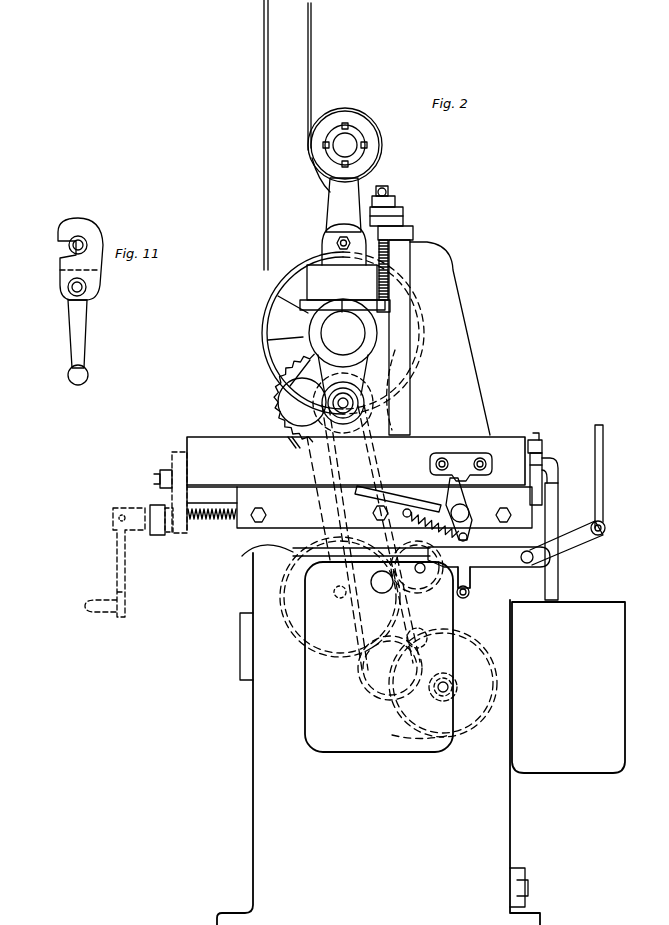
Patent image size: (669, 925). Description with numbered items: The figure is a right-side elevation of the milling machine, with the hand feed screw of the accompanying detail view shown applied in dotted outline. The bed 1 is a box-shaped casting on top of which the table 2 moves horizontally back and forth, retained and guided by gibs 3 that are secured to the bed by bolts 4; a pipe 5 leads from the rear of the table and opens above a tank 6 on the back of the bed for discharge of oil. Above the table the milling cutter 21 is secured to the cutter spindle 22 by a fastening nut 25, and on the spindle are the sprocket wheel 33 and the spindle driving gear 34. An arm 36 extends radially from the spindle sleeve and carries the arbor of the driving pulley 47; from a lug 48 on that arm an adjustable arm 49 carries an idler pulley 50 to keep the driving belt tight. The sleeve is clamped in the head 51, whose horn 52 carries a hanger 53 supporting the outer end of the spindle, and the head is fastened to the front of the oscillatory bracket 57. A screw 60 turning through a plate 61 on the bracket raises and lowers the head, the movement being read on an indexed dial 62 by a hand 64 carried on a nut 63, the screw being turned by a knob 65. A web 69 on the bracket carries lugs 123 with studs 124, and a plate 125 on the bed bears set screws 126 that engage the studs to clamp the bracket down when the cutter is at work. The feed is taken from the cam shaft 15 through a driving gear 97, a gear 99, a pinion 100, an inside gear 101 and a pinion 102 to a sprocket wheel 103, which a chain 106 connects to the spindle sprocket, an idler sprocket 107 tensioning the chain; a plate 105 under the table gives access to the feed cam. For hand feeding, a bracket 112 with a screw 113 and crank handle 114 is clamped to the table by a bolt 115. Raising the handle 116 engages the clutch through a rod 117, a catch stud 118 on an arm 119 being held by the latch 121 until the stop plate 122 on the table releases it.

In FIG. 2, the bed 1 is at (378, 739).
In FIG. 2, the table 2 is at (356, 461).
In FIG. 2, the gibs 3 is at (359, 507).
In FIG. 2, the bolts 4 is at (260, 509).
In FIG. 2, the pipe 5 is at (562, 573).
In FIG. 2, the tank 6 is at (568, 687).
In FIG. 2, the cam shaft 15 is at (341, 600).
In FIG. 2, the milling cutter 21 is at (390, 397).
In FIG. 2, the cutter spindle 22 is at (366, 408).
In FIG. 2, the fastening nut 25 is at (300, 404).
In FIG. 2, the sprocket wheel 33 is at (290, 372).
In FIG. 2, the spindle driving gear 34 is at (286, 428).
In FIG. 2, the arm 36 is at (342, 288).
In FIG. 2, the driving pulley 47 is at (293, 267).
In FIG. 2, the lug 48 is at (344, 244).
In FIG. 2, the arm 49 is at (343, 205).
In FIG. 2, the idler pulley 50 is at (375, 118).
In FIG. 2, the head 51 is at (377, 320).
In FIG. 2, the horn 52 is at (365, 339).
In FIG. 2, the hanger 53 is at (368, 370).
In FIG. 2, the oscillatory bracket 57 is at (413, 252).
In FIG. 2, the screw 60 is at (389, 283).
In FIG. 2, the plate 61 is at (413, 233).
In FIG. 2, the indexed dial 62 is at (404, 219).
In FIG. 2, the nut 63 is at (396, 206).
In FIG. 2, the hand 64 is at (337, 202).
In FIG. 2, the knob 65 is at (386, 194).
In FIG. 2, the web 69 is at (473, 426).
In FIG. 2, the driving gear 97 is at (285, 626).
In FIG. 2, the gear 99 is at (352, 683).
In FIG. 2, the pinion 100 is at (418, 630).
In FIG. 2, the gear 101 is at (486, 634).
In FIG. 2, the pinion 102 is at (455, 692).
In FIG. 2, the sprocket wheel 103 is at (466, 740).
In FIG. 2, the plate 105 is at (379, 657).
In FIG. 2, the chain 106 is at (342, 513).
In FIG. 2, the idler sprocket 107 is at (452, 556).
In FIG. 2, the bracket 112 is at (175, 455).
In FIG. 11, the bracket 112 is at (62, 270).
In FIG. 2, the screw 113 is at (206, 531).
In FIG. 11, the screw 113 is at (68, 292).
In FIG. 2, the crank handle 114 is at (117, 569).
In FIG. 11, the crank handle 114 is at (70, 335).
In FIG. 2, the bolt 115 is at (158, 478).
In FIG. 11, the bolt 115 is at (87, 236).
In FIG. 2, the handle 116 is at (284, 553).
In FIG. 2, the rod 117 is at (605, 462).
In FIG. 2, the catch stud 118 is at (470, 594).
In FIG. 2, the arm 119 is at (478, 574).
In FIG. 2, the latch 121 is at (478, 509).
In FIG. 2, the stop plate 122 is at (463, 468).
In FIG. 2, the lugs 123 is at (559, 500).
In FIG. 2, the studs 124 is at (556, 470).
In FIG. 2, the plate 125 is at (544, 456).
In FIG. 2, the set screws 126 is at (541, 442).